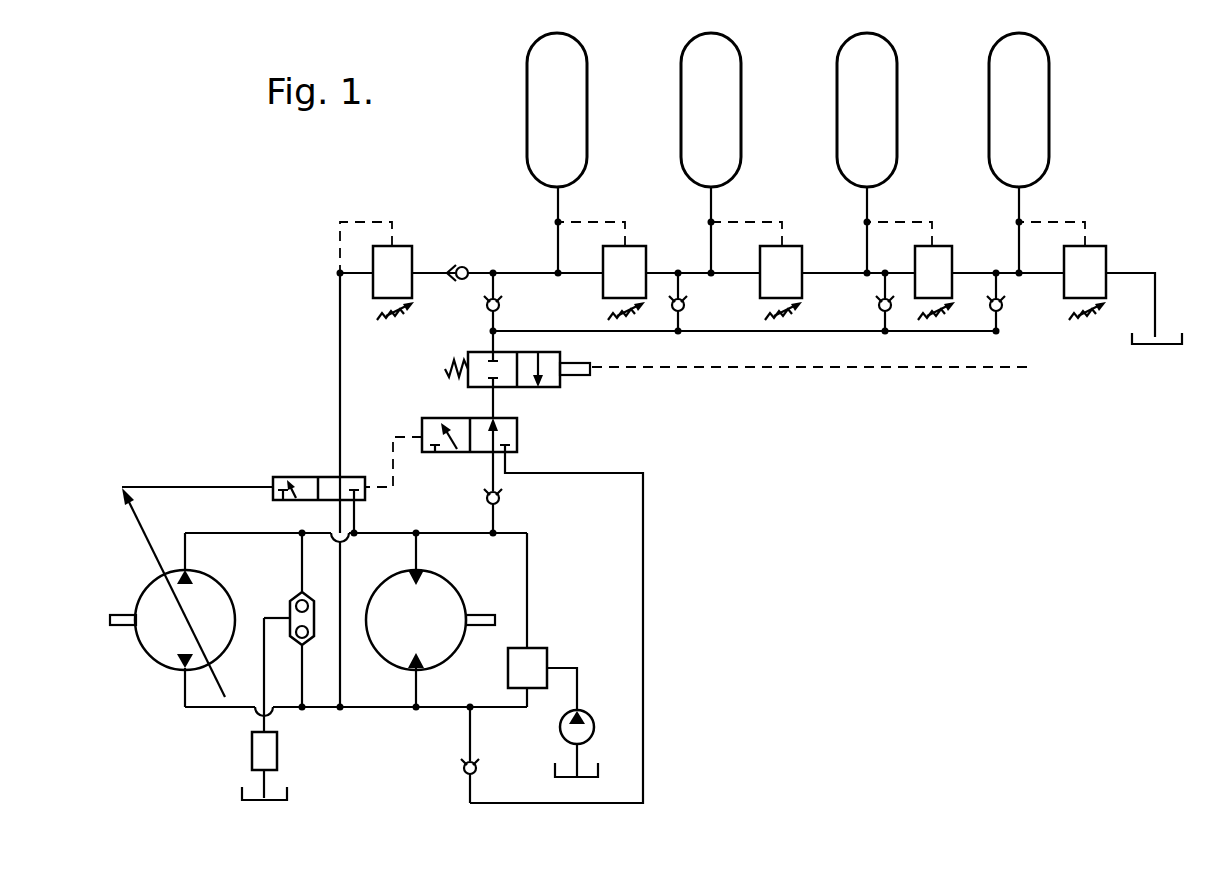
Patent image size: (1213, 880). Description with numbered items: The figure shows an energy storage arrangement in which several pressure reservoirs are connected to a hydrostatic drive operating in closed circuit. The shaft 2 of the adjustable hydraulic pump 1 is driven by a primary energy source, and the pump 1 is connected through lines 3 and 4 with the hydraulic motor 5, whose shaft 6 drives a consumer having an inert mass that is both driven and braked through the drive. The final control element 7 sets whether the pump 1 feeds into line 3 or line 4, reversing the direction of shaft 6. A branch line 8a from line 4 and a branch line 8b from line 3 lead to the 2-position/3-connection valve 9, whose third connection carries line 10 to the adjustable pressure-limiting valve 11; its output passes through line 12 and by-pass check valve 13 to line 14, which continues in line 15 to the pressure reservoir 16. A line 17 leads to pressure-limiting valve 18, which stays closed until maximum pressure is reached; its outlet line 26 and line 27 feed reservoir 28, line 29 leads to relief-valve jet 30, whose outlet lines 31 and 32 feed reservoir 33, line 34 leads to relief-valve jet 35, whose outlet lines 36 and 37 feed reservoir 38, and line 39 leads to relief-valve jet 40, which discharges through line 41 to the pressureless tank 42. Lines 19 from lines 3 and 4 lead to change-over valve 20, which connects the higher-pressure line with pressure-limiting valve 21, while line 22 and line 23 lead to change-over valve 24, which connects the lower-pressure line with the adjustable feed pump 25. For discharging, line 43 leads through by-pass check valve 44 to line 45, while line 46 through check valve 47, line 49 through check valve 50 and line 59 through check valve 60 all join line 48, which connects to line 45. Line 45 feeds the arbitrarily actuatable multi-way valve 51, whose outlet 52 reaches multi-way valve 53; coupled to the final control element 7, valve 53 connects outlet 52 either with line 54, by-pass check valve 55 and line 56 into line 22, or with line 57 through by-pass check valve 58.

The adjustable hydraulic pump 1 is at (150, 657).
The shaft 2 is at (119, 610).
The line 3 is at (388, 538).
The line 4 is at (392, 706).
The hydraulic motor 5 is at (450, 656).
The shaft 6 is at (473, 610).
The final control element 7 is at (136, 532).
The branch line 8a is at (330, 518).
The branch line 8b is at (357, 516).
The 2-position/3-connection valve 9 is at (298, 476).
The line 10 is at (338, 352).
The adjustable pressure-limiting valve 11 is at (403, 283).
The line 12 is at (436, 271).
The by-pass check valve 13 is at (466, 263).
The line 14 is at (514, 271).
The line 15 is at (560, 204).
The pressure reservoir 16 is at (587, 118).
The line 17 is at (590, 275).
The pressure-limiting valve 18 is at (635, 283).
The line 19 is at (300, 564).
The change-over valve 20 is at (288, 600).
The pressure-limiting valve 21 is at (250, 752).
The line 22 is at (529, 568).
The line 23 is at (500, 712).
The change-over valve 24 is at (548, 648).
The adjustable feed pump 25 is at (594, 718).
The line 26 is at (686, 272).
The line 27 is at (713, 204).
The pressure reservoir 28 is at (741, 118).
The line 29 is at (742, 272).
The relief-valve jet 30 is at (793, 283).
The line 31 is at (834, 272).
The line 32 is at (869, 204).
The pressure reservoir 33 is at (897, 118).
The line 34 is at (900, 250).
The relief-valve jet 35 is at (946, 283).
The line 36 is at (981, 272).
The line 37 is at (1021, 204).
The pressure reservoir 38 is at (1049, 118).
The line 39 is at (1042, 272).
The relief-valve jet 40 is at (1097, 283).
The line 41 is at (1157, 307).
The pressureless tank 42 is at (1164, 350).
The line 43 is at (496, 283).
The by-pass check valve 44 is at (498, 310).
The line 45 is at (488, 342).
The line 46 is at (681, 283).
The by-pass check valve 47 is at (683, 310).
The line 48 is at (745, 333).
The line 49 is at (880, 286).
The by-pass check valve 50 is at (880, 314).
The 2-position/2-connection multi-way valve 51 is at (572, 394).
The outlet 52 is at (488, 401).
The multi-way valve 53 is at (518, 437).
The line 54 is at (490, 479).
The by-pass check valve 55 is at (500, 503).
The line 56 is at (490, 521).
The line 57 is at (645, 567).
The by-pass check valve 58 is at (462, 769).
The line 59 is at (999, 283).
The by-pass check valve 60 is at (1001, 310).